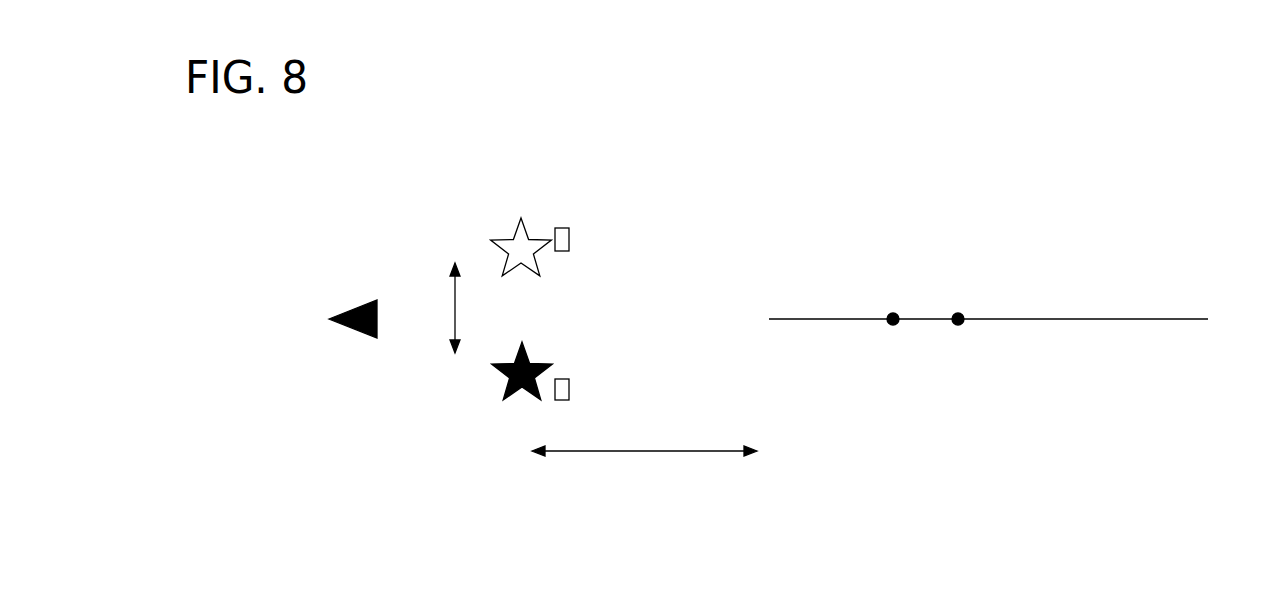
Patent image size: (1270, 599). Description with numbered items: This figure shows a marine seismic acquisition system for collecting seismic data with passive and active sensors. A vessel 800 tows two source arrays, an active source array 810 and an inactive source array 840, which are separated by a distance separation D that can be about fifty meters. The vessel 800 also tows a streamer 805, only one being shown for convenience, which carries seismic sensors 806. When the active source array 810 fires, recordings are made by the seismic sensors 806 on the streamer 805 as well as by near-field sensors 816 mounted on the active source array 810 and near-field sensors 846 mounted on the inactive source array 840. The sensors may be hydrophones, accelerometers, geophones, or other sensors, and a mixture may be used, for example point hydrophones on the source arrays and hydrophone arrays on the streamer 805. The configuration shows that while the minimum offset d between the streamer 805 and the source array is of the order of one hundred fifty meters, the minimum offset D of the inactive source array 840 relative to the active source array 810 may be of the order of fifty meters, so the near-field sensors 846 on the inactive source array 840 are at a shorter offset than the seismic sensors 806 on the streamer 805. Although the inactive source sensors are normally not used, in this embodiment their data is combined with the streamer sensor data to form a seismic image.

The vessel 800 is at (356, 311).
The streamer 805 is at (1133, 319).
The seismic sensors 806 is at (958, 325).
The active source array 810 is at (513, 390).
The near-field sensors 816 is at (571, 390).
The inactive source array 840 is at (508, 240).
The near-field sensors 846 is at (565, 228).
The distance separation D is at (453, 310).
The minimum offset d is at (641, 453).